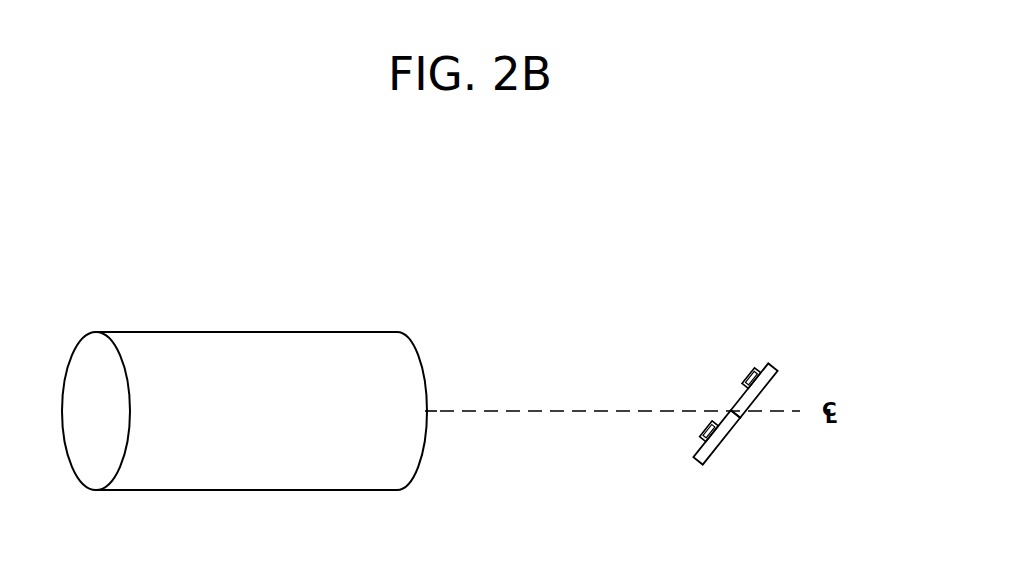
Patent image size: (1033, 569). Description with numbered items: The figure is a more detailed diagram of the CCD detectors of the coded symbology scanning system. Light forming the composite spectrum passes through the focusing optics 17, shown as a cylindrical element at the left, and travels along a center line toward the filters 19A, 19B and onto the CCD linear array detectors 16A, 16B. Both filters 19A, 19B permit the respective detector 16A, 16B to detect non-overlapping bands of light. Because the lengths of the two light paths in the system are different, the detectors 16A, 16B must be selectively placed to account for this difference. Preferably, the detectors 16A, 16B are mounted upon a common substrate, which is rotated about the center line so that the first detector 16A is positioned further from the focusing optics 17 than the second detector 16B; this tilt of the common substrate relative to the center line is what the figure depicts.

The focusing optics 17 is at (332, 332).
The first CCD linear sensor 16A is at (778, 378).
The second CCD linear sensor 16B is at (722, 441).
The first filter 19A is at (752, 377).
The second filter 19B is at (700, 436).